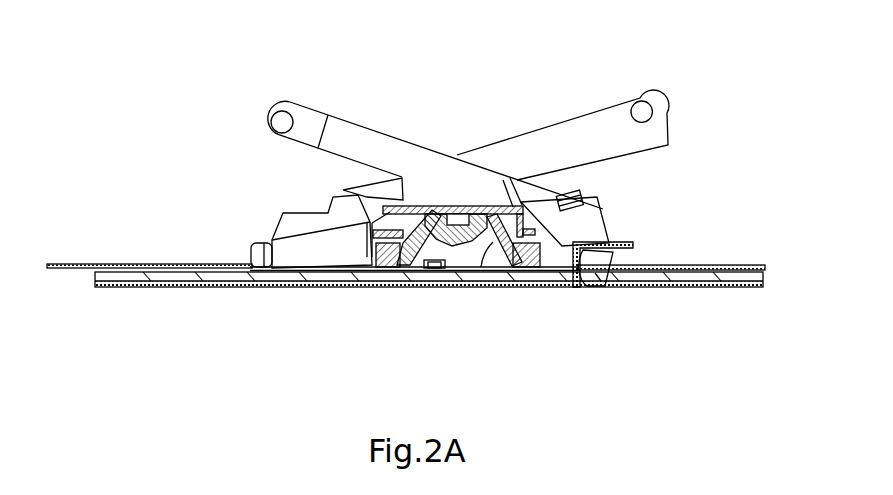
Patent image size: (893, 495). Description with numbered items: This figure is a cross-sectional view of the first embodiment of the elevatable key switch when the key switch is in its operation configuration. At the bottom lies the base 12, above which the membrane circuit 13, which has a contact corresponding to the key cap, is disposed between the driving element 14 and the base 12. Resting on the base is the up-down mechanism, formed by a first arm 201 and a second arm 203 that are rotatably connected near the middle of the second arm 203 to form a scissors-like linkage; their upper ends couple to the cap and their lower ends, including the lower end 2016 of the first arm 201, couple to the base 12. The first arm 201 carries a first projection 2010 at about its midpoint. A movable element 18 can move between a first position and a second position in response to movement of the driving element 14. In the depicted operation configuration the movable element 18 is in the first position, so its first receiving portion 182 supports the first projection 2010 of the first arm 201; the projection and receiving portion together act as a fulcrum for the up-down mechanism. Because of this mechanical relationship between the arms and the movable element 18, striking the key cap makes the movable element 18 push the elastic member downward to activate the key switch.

The base 12 is at (732, 288).
The membrane circuit 13 is at (764, 278).
The driving element 14 is at (748, 266).
The movable element 18 is at (352, 193).
The first receiving portion 182 is at (494, 242).
The first arm 201 is at (352, 132).
The second arm 203 is at (577, 133).
The first projection 2010 is at (530, 237).
The lower end 2016 is at (596, 276).